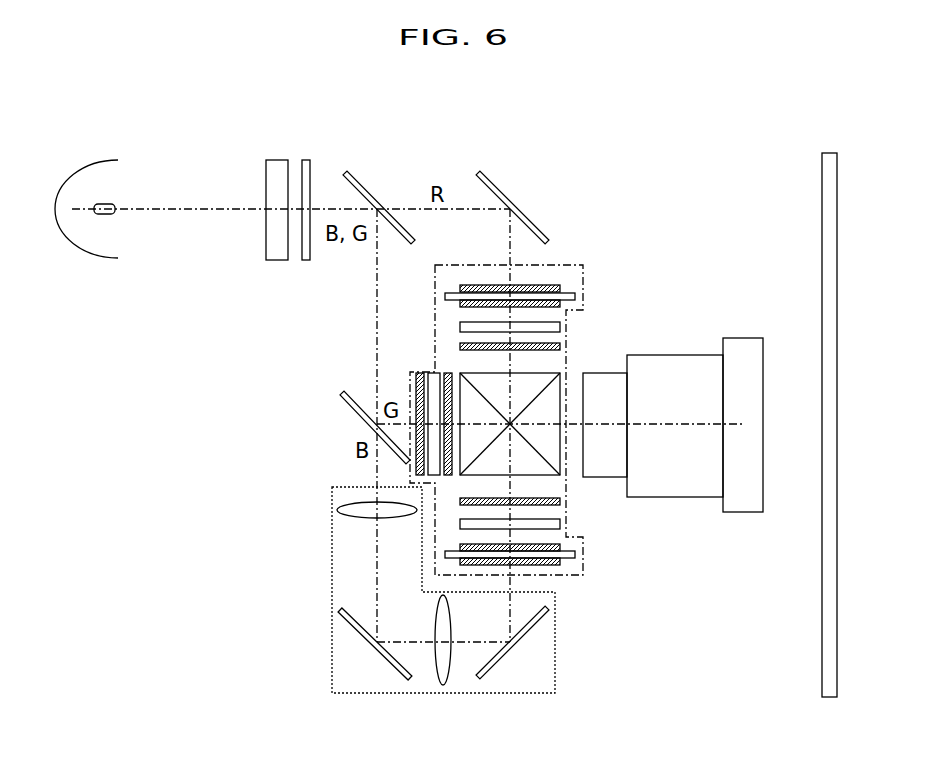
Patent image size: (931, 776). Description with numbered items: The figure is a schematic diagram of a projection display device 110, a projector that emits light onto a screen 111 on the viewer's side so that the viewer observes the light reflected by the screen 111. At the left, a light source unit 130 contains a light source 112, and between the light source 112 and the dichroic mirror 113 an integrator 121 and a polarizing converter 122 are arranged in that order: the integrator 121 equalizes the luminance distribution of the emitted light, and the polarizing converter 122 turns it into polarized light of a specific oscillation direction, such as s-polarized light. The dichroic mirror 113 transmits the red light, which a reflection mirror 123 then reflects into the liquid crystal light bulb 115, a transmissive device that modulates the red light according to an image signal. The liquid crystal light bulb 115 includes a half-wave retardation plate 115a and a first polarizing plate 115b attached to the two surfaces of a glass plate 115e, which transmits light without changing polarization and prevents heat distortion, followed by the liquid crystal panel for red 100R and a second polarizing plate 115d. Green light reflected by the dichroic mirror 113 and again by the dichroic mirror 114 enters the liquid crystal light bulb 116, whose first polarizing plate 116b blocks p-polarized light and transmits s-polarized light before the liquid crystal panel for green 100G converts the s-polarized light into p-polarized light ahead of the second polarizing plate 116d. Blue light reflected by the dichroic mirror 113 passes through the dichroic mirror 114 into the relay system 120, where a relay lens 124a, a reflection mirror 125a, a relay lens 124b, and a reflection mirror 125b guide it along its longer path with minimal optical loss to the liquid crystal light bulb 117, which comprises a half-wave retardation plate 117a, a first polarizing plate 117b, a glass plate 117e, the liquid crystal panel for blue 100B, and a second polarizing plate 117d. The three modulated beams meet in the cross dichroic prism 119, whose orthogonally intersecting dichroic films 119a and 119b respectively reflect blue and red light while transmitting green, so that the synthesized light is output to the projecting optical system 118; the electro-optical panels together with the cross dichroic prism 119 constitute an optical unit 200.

The projection display device 110 is at (604, 160).
The screen 111 is at (829, 153).
The light source 112 is at (72, 170).
The light source unit 130 is at (86, 287).
The integrator 121 is at (275, 158).
The polarizing converter 122 is at (308, 158).
The dichroic mirror 113 is at (367, 185).
The dichroic mirror 114 is at (357, 418).
The reflection mirror 123 is at (500, 185).
The liquid crystal light bulb 115 is at (603, 281).
The λ/2 retardation plate 115a is at (570, 285).
The first polarizing plate 115b is at (562, 306).
The second polarizing plate 115d is at (563, 346).
The glass plate 115e is at (576, 296).
The liquid crystal panel for red 100R is at (563, 325).
The liquid crystal light bulb 116 is at (324, 386).
The first polarizing plate 116b is at (420, 373).
The second polarizing plate 116d is at (449, 373).
The liquid crystal panel for green 100G is at (433, 372).
The liquid crystal light bulb 117 is at (603, 567).
The λ/2 retardation plate 117a is at (565, 562).
The first polarizing plate 117b is at (570, 548).
The second polarizing plate 117d is at (562, 500).
The glass plate 117e is at (577, 555).
The liquid crystal panel for blue 100B is at (560, 525).
The cross dichroic prism 119 is at (501, 391).
The dichroic film 119a is at (558, 384).
The dichroic film 119b is at (467, 376).
The projecting optical system 118 is at (742, 499).
The optical unit 200 is at (570, 407).
The relay system 120 is at (444, 618).
The relay lens 124a is at (338, 512).
The relay lens 124b is at (445, 687).
The reflection mirror 125a is at (383, 655).
The reflection mirror 125b is at (528, 637).